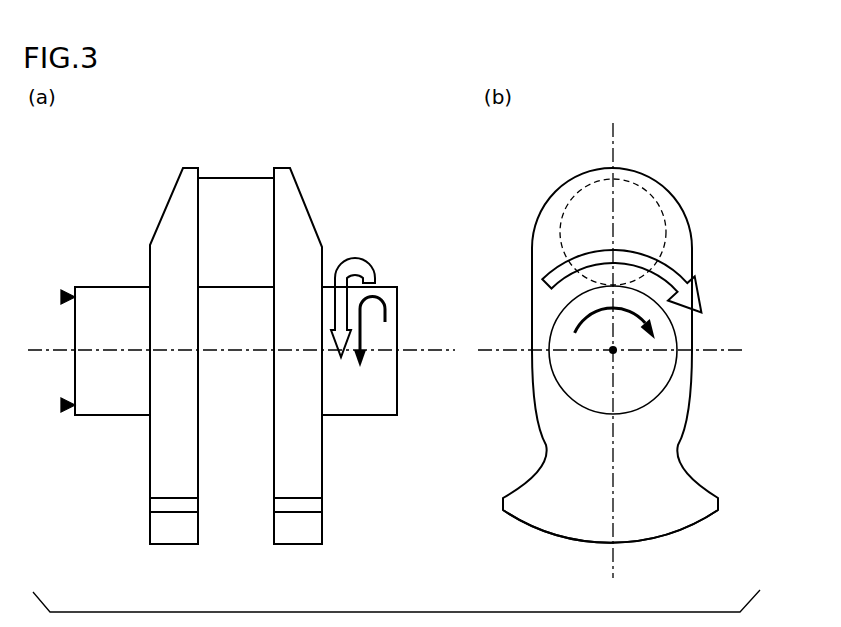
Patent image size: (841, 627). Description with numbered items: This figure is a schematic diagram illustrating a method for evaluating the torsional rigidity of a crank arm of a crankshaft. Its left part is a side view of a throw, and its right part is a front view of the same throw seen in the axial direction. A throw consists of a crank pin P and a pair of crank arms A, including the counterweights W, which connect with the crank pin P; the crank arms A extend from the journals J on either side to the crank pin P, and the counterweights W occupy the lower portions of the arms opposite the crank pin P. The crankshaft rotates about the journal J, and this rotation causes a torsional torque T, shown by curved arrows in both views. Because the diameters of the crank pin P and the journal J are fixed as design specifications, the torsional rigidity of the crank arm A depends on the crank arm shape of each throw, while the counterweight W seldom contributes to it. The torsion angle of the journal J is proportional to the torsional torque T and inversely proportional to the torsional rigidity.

The crank arm A is at (172, 200).
The crank pin P is at (258, 183).
The journal J is at (98, 293).
The counterweight W is at (152, 515).
The torsional torque T is at (526, 294).